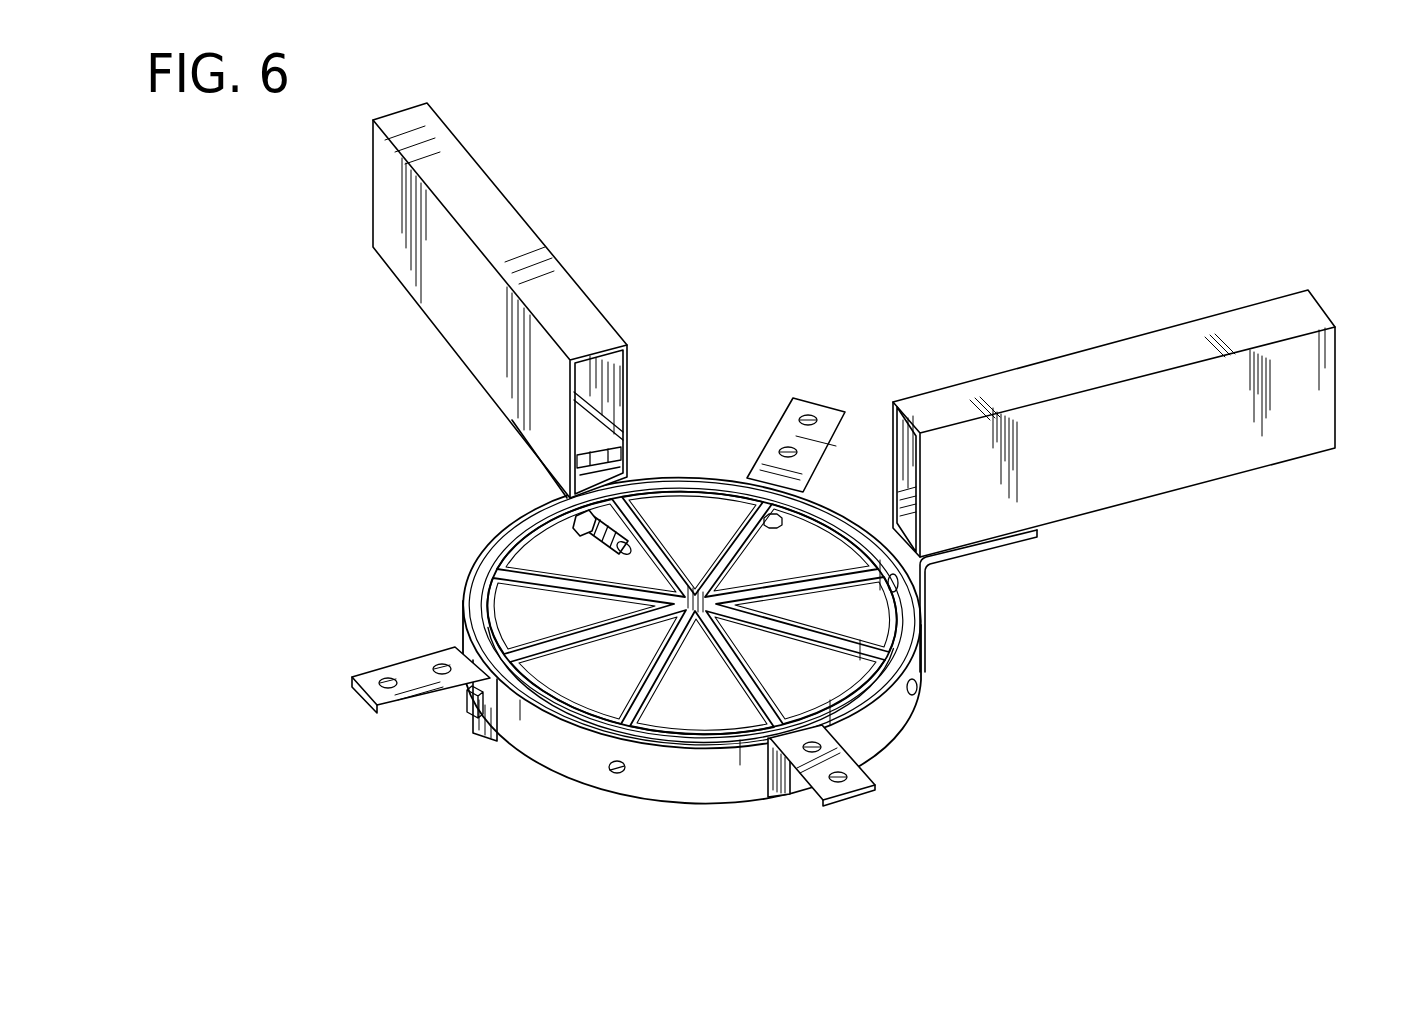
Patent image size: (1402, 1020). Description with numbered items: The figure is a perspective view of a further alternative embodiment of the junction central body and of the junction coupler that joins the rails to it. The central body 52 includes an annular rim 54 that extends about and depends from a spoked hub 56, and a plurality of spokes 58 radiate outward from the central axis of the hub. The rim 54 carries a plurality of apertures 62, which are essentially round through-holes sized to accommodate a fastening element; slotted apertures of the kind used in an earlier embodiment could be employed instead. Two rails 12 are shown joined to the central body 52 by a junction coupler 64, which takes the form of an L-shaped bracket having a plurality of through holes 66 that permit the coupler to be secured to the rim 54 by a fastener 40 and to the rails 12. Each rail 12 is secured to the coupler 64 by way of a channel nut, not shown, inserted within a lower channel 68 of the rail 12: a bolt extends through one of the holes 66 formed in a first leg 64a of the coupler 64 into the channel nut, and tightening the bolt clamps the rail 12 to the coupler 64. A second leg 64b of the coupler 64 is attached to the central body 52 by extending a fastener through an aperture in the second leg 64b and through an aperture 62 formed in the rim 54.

The rail 12 is at (503, 218).
The fastener 40 is at (578, 534).
The central body 52 is at (470, 548).
The annular rim 54 is at (538, 753).
The spoked hub 56 is at (850, 640).
The spokes 58 is at (768, 698).
The apertures 62 is at (610, 777).
The junction coupler 64 is at (850, 803).
The first leg 64a is at (362, 673).
The second leg 64b is at (483, 730).
The through holes 66 is at (850, 775).
The lower channel 68 is at (620, 458).